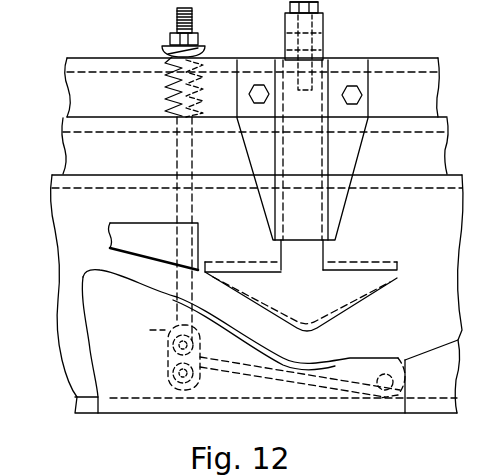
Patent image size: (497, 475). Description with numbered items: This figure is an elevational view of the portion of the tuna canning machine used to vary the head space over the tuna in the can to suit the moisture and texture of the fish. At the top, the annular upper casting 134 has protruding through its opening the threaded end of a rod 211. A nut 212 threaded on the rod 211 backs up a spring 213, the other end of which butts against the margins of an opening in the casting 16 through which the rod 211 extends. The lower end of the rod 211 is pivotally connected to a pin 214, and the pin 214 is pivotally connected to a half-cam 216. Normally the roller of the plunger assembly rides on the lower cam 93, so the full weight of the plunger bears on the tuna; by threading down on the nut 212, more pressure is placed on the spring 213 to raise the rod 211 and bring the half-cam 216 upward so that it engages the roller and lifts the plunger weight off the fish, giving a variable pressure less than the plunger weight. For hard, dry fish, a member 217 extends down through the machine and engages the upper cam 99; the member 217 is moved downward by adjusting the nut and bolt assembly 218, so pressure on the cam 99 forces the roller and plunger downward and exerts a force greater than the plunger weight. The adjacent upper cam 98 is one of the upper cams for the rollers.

The upper casting 134 is at (64, 98).
The casting 16 is at (66, 150).
The lower cam 93 is at (413, 368).
The upper cam 98 is at (154, 246).
The upper cam 99 is at (347, 295).
The rod 211 is at (193, 17).
The nut 212 is at (200, 42).
The spring 213 is at (165, 90).
The pin 214 is at (165, 348).
The half-cam 216 is at (282, 360).
The member 217 is at (285, 33).
The nut and bolt assembly 218 is at (328, 43).